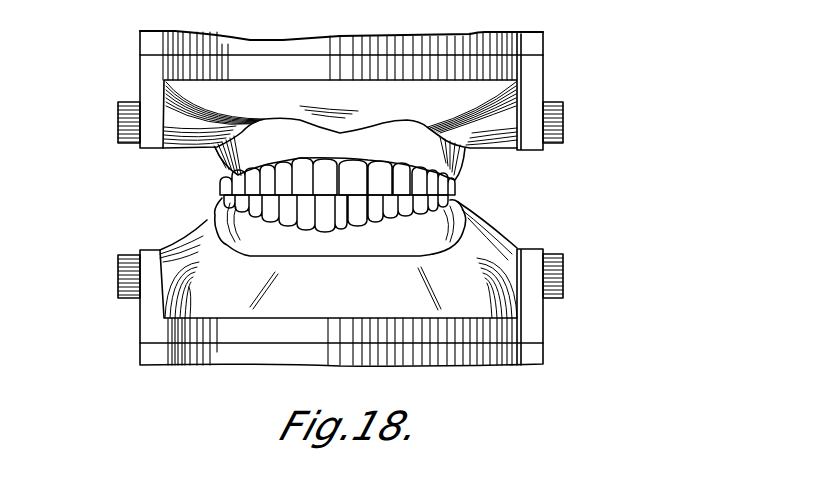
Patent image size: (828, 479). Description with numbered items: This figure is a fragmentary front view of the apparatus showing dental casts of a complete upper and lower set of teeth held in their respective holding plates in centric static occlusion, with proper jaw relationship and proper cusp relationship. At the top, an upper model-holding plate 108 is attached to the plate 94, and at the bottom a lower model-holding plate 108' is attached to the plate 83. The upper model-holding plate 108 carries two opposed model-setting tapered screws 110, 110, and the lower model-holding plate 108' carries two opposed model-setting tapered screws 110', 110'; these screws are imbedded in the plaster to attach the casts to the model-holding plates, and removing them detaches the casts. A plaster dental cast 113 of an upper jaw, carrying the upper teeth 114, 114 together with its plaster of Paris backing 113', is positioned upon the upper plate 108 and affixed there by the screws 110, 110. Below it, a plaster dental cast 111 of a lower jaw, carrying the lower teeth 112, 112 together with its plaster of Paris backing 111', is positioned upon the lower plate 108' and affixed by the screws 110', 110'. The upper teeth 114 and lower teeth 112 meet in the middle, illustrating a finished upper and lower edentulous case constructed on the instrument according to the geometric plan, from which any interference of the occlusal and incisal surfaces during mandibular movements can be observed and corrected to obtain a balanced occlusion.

The plate 94 is at (147, 43).
The upper model-holding plate 108 is at (313, 91).
The model-setting tapered screws 110 is at (350, 121).
The plaster of Paris backing 113' is at (340, 115).
The upper teeth 114 is at (327, 173).
The plaster dental cast of an upper jaw 113 is at (308, 159).
The plaster dental cast of a lower jaw 111 is at (309, 227).
The lower teeth 112 is at (317, 212).
The model-setting tapered screws 110' is at (352, 279).
The plaster of Paris backing 111' is at (338, 260).
The lower model-holding plate 108' is at (304, 307).
The plate 83 is at (153, 352).